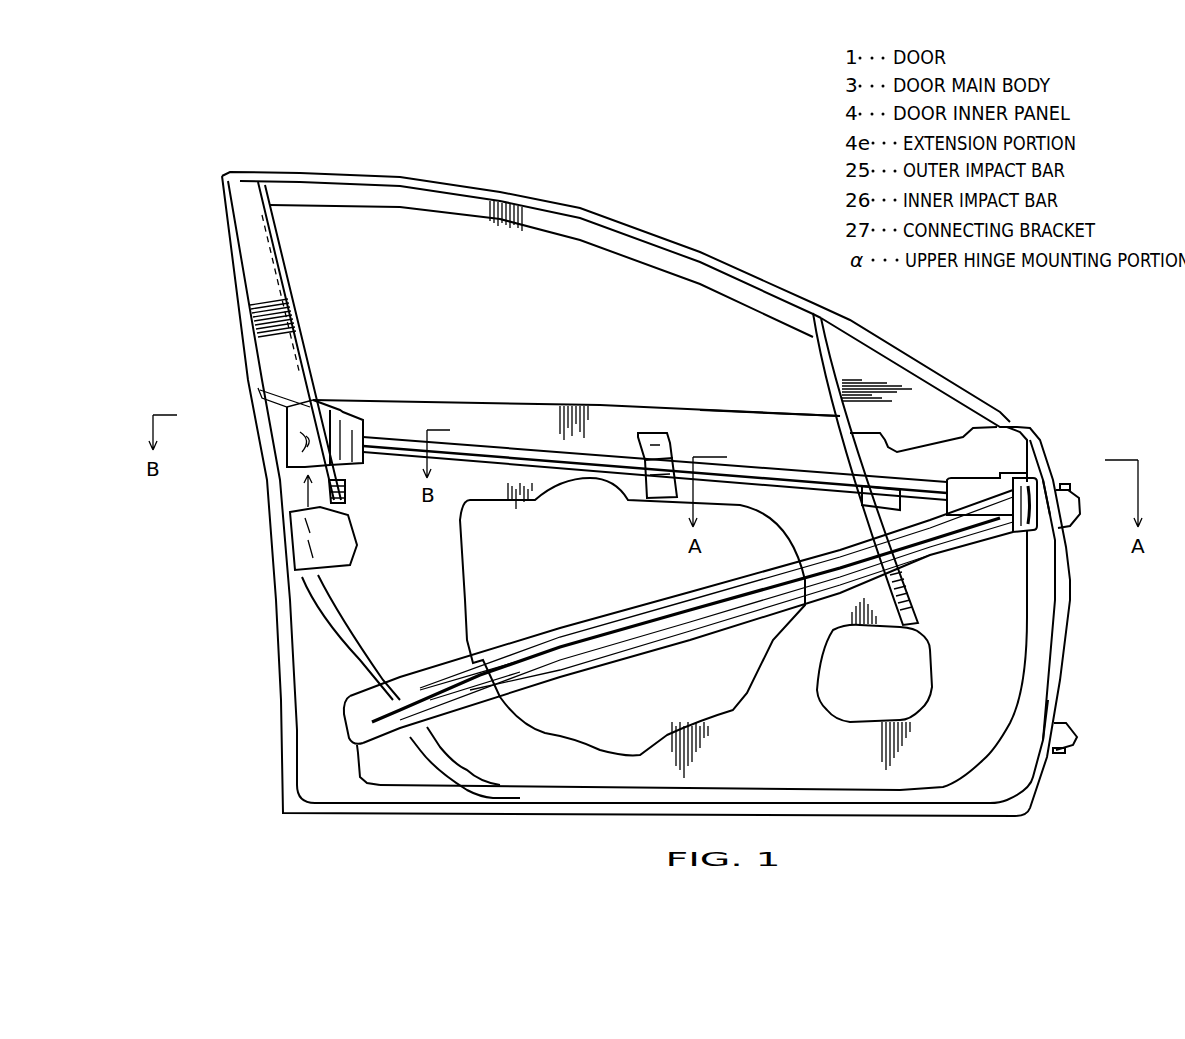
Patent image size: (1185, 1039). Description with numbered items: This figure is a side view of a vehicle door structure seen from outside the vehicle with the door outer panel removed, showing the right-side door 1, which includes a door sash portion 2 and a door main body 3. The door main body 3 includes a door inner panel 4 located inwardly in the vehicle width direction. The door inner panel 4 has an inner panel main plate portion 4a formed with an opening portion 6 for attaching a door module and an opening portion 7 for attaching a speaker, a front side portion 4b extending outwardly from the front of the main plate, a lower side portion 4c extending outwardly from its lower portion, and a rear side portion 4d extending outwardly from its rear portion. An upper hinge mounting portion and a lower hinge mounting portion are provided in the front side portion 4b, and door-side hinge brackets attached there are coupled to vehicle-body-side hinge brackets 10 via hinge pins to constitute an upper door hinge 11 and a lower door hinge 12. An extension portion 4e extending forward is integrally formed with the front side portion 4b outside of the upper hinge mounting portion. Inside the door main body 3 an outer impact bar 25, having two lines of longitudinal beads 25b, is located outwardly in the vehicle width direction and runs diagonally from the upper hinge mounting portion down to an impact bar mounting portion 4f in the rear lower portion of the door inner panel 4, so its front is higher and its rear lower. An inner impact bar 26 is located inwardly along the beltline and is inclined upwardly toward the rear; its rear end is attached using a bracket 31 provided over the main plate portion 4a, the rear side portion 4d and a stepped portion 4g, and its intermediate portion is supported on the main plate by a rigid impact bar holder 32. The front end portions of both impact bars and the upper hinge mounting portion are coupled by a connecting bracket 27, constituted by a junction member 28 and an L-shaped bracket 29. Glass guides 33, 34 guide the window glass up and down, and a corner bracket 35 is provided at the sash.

The door 1 is at (1068, 362).
The door sash portion 2 is at (567, 205).
The door main body 3 is at (268, 650).
The door inner panel 4 is at (501, 391).
The inner panel main plate portion 4a is at (733, 420).
The front side portion 4b is at (1027, 610).
The lower side portion 4c is at (748, 784).
The rear side portion 4d is at (320, 600).
The extension portion 4e is at (1035, 455).
The impact bar mounting portion 4f is at (343, 723).
The stepped portion 4g is at (297, 473).
The opening portion 6 is at (470, 620).
The opening portion 7 is at (823, 660).
The vehicle-body-side hinge bracket 10 is at (1067, 484).
The upper door hinge 11 is at (1089, 478).
The lower door hinge 12 is at (1092, 740).
The outer impact bar 25 is at (678, 617).
The beads 25b is at (601, 654).
The inner impact bar 26 is at (585, 480).
The connecting bracket 27 is at (986, 412).
The junction member 28 is at (962, 478).
The bracket 29 is at (1008, 473).
The bracket 31 is at (347, 412).
The impact bar holder 32 is at (650, 433).
The glass guide 33 is at (870, 520).
The glass guide 34 is at (348, 480).
The corner bracket 35 is at (857, 357).